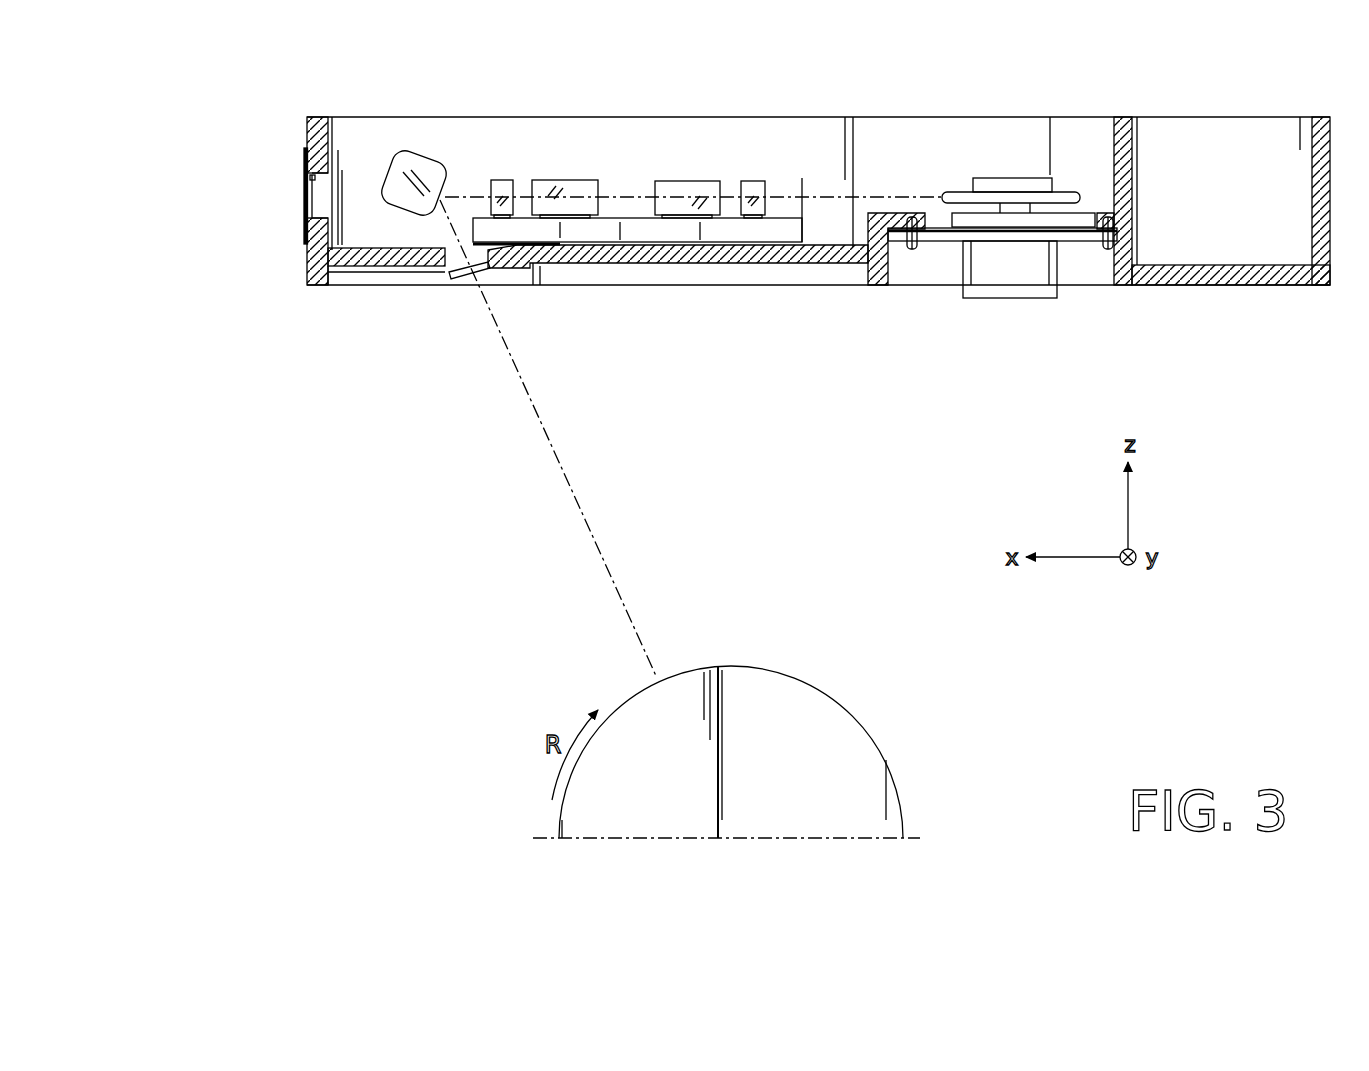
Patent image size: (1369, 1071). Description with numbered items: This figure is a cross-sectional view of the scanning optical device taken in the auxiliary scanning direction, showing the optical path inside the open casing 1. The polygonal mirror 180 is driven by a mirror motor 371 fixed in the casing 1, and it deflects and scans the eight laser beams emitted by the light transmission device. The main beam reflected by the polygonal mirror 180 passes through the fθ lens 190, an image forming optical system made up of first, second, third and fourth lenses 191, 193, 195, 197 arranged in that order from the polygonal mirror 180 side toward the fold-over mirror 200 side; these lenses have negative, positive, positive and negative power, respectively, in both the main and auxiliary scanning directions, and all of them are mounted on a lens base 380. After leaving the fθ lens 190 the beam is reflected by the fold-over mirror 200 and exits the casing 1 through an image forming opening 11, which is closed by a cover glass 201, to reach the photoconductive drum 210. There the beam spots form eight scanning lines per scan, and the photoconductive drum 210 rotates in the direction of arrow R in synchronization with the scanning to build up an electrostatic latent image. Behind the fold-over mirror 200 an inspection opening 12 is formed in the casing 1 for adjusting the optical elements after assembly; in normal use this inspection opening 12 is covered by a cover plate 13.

The casing 1 is at (1330, 215).
The image forming opening 11 is at (447, 265).
The inspection opening 12 is at (310, 180).
The cover plate 13 is at (310, 217).
The polygonal mirror 180 is at (1028, 180).
The fθ lens 190 is at (634, 116).
The first lens 191 is at (736, 144).
The second lens 193 is at (680, 183).
The third lens 195 is at (567, 182).
The fourth lens 197 is at (502, 182).
The fold-over mirror 200 is at (422, 150).
The cover glass 201 is at (463, 279).
The photoconductive drum 210 is at (848, 712).
The mirror motor 371 is at (1013, 277).
The lens base 380 is at (670, 232).